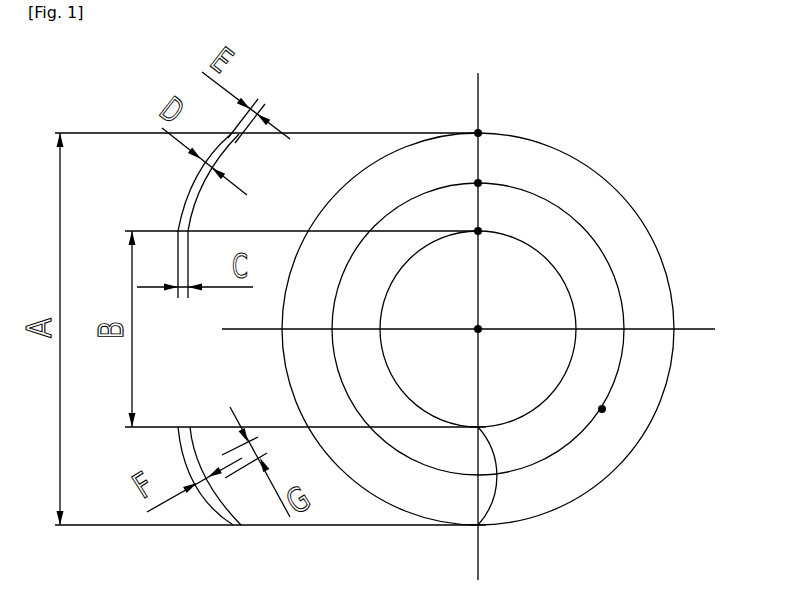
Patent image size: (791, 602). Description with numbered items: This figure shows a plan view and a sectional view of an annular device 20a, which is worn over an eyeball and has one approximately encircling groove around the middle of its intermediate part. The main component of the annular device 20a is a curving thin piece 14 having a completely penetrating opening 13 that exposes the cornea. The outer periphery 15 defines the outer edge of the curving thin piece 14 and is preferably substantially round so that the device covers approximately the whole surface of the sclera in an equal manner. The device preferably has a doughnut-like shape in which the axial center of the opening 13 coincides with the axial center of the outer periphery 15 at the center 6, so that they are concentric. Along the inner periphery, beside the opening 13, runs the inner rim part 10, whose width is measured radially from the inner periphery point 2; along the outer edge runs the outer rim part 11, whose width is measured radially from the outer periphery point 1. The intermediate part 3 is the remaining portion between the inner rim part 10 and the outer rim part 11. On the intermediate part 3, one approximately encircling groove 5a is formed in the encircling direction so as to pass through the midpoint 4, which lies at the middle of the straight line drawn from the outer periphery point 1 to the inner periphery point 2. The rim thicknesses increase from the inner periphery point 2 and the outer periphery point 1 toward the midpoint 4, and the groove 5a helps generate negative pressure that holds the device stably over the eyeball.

The annular device 20a is at (445, 113).
The outer periphery point 1 is at (478, 289).
The midpoint 4 is at (495, 275).
The inner periphery point 2 is at (546, 268).
The opening 13 is at (602, 205).
The curving thin piece 14 is at (675, 234).
The outer periphery 15 is at (706, 260).
The center 6 is at (512, 299).
The approximately encircling groove 5a is at (675, 432).
The inner rim part 10 is at (600, 472).
The intermediate part 3 is at (584, 489).
The outer rim part 11 is at (551, 553).